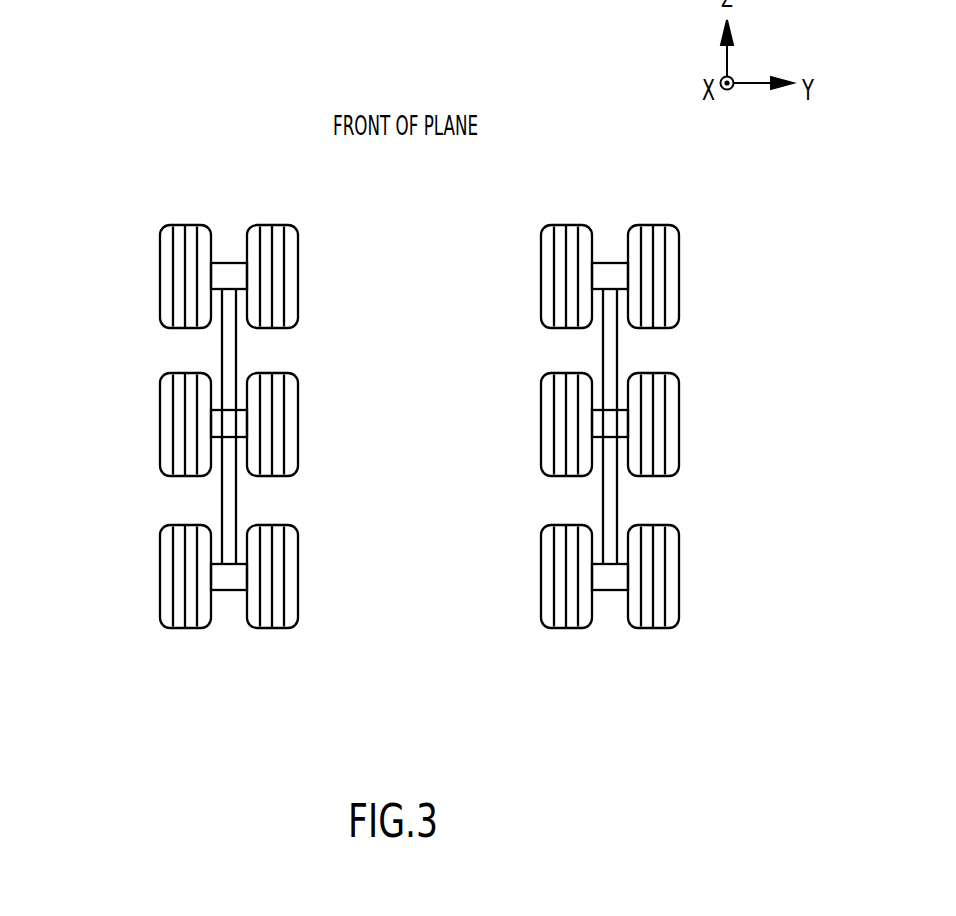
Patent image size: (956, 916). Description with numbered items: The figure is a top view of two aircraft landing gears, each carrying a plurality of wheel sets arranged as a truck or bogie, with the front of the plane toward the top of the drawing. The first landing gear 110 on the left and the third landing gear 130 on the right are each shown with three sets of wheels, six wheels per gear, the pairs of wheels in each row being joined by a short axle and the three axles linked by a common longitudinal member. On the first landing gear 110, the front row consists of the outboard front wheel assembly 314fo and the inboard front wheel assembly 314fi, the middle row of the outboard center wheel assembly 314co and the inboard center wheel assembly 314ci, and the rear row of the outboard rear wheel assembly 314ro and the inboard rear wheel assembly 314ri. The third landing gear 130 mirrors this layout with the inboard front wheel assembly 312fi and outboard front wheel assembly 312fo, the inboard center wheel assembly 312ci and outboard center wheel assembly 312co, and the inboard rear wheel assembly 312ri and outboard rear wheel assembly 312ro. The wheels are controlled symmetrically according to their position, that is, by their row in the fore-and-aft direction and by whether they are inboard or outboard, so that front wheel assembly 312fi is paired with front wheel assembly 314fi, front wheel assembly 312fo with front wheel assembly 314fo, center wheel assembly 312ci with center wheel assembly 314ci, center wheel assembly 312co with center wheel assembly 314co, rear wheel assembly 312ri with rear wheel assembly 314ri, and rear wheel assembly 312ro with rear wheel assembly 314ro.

The first landing gear 110 is at (224, 130).
The third landing gear 130 is at (604, 130).
The front wheel assembly 314fo is at (134, 276).
The front wheel assembly 314fi is at (312, 265).
The center wheel assembly 314co is at (134, 424).
The center wheel assembly 314ci is at (313, 419).
The rear wheel assembly 314ro is at (134, 576).
The rear wheel assembly 314ri is at (312, 575).
The front wheel assembly 312fi is at (518, 276).
The front wheel assembly 312fo is at (703, 274).
The center wheel assembly 312ci is at (516, 424).
The center wheel assembly 312co is at (700, 419).
The rear wheel assembly 312ri is at (516, 576).
The rear wheel assembly 312ro is at (703, 576).